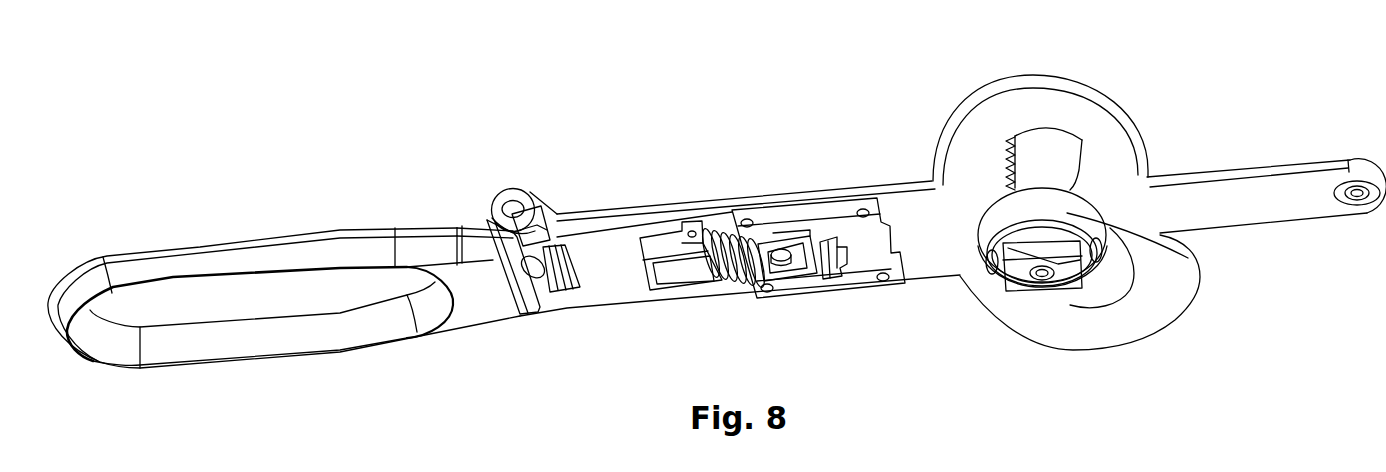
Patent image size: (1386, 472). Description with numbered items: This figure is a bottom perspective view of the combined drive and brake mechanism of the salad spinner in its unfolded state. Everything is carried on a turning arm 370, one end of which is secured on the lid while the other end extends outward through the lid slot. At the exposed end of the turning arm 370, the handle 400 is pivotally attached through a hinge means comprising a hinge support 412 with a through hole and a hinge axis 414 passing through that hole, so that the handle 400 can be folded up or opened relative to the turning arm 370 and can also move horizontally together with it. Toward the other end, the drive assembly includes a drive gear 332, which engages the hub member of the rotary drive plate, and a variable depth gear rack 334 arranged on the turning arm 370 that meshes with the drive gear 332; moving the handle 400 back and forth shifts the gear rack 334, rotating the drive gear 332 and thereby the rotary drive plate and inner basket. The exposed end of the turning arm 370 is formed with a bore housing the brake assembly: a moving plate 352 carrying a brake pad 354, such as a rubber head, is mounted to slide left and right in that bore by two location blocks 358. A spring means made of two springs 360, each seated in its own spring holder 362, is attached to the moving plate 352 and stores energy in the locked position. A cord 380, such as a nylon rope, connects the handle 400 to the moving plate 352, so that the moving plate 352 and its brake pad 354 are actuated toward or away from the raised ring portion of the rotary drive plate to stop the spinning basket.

The handle 400 is at (322, 247).
The hinge axis 414 is at (507, 207).
The hinge support 412 is at (532, 203).
The cord 380 is at (558, 275).
The spring holder 362 is at (660, 250).
The spring 360 is at (722, 230).
The location block 358 is at (800, 223).
The moving plate 352 is at (805, 272).
The brake pad 354 is at (835, 268).
The variable depth gear rack 334 is at (1025, 152).
The drive gear 332 is at (1188, 258).
The turning arm 370 is at (1253, 197).